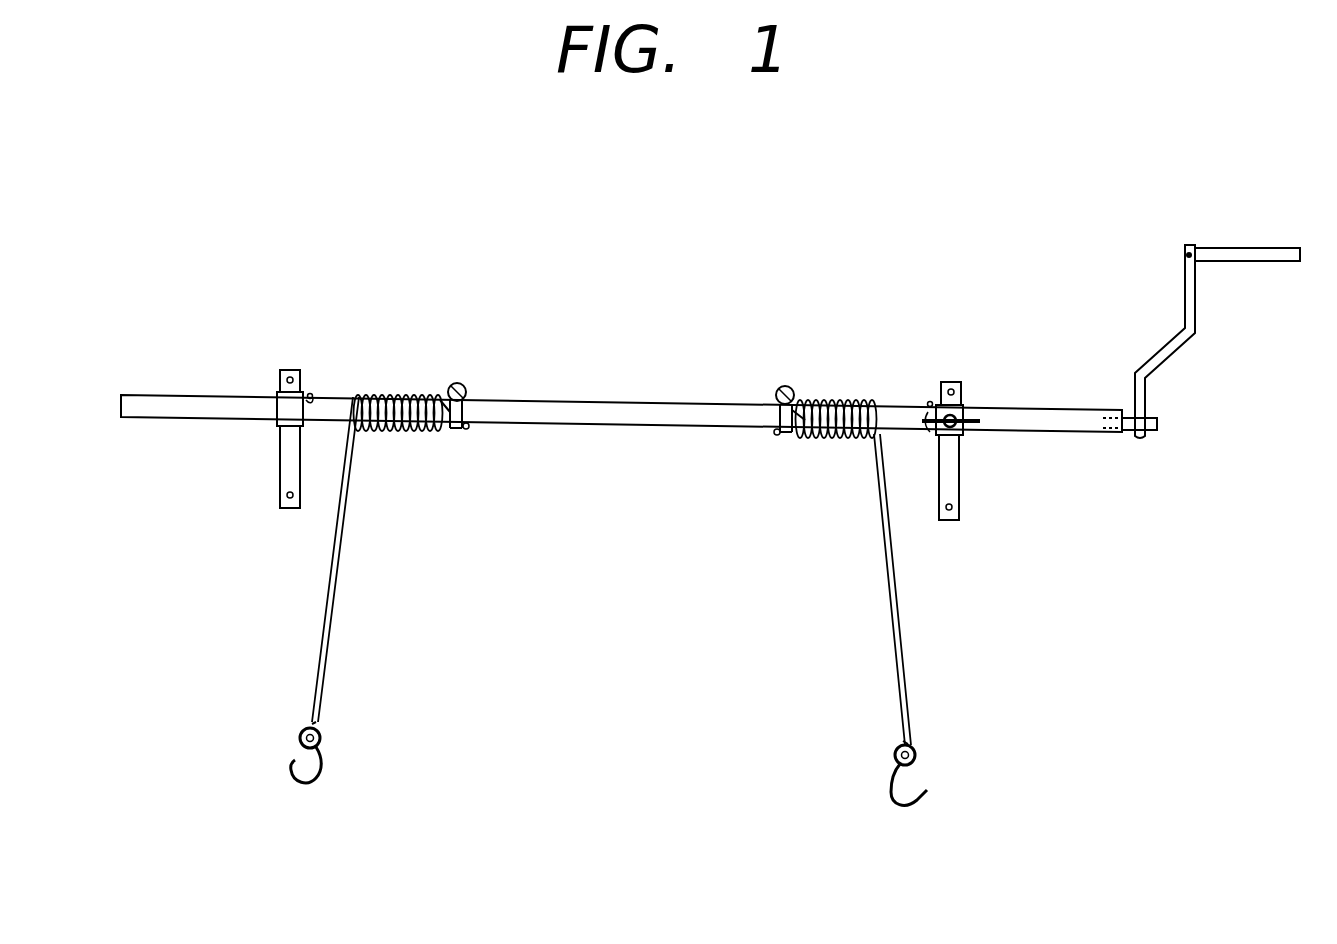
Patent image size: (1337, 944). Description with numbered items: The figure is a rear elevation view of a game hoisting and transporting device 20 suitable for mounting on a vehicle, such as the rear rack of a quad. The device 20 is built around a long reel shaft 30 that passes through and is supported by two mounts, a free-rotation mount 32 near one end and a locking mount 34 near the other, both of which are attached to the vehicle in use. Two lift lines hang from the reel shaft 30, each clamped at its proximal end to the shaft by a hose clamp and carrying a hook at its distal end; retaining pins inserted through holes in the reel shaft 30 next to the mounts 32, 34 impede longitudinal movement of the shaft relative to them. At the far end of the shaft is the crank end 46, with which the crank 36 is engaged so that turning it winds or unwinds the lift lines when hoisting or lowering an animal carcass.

The game hoisting and transporting device 20 is at (619, 254).
The reel shaft 30 is at (683, 417).
The free-rotation mount 32 is at (293, 412).
The locking mount 34 is at (961, 440).
The crank 36 is at (1175, 345).
The crank end 46 is at (1125, 442).